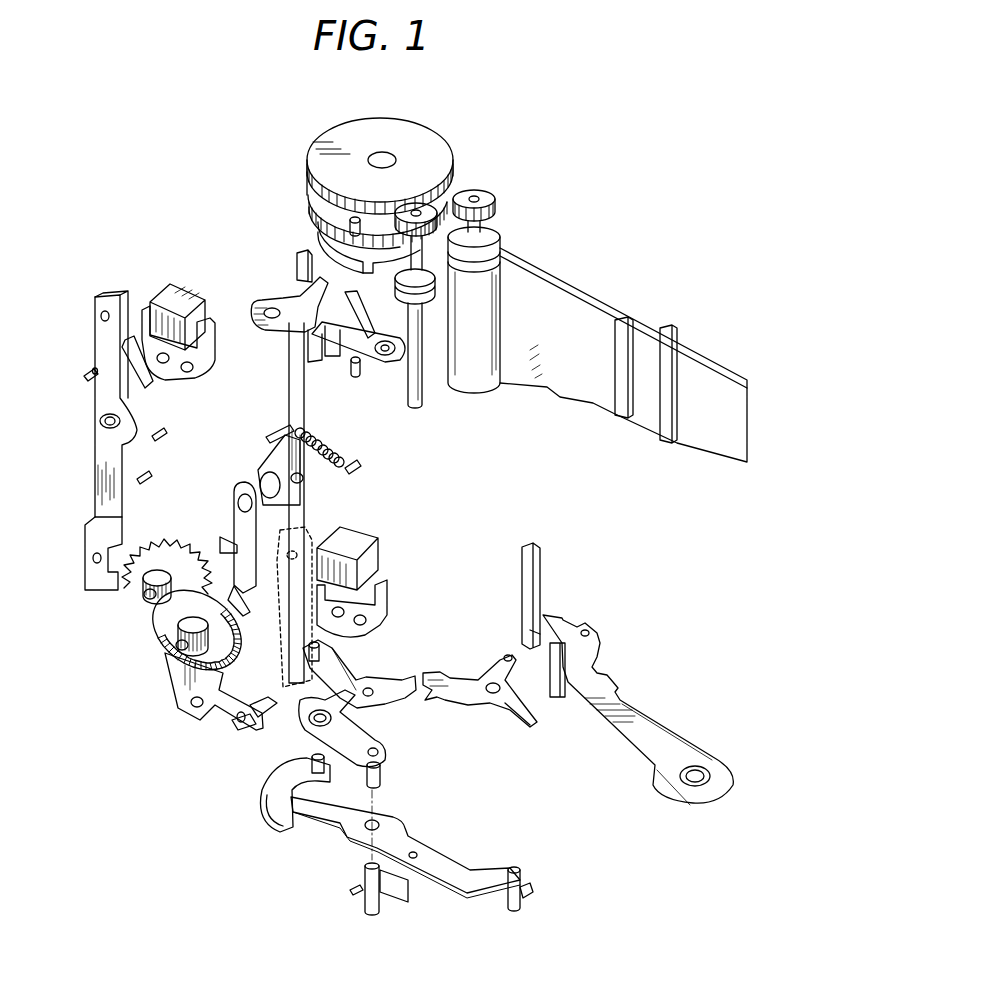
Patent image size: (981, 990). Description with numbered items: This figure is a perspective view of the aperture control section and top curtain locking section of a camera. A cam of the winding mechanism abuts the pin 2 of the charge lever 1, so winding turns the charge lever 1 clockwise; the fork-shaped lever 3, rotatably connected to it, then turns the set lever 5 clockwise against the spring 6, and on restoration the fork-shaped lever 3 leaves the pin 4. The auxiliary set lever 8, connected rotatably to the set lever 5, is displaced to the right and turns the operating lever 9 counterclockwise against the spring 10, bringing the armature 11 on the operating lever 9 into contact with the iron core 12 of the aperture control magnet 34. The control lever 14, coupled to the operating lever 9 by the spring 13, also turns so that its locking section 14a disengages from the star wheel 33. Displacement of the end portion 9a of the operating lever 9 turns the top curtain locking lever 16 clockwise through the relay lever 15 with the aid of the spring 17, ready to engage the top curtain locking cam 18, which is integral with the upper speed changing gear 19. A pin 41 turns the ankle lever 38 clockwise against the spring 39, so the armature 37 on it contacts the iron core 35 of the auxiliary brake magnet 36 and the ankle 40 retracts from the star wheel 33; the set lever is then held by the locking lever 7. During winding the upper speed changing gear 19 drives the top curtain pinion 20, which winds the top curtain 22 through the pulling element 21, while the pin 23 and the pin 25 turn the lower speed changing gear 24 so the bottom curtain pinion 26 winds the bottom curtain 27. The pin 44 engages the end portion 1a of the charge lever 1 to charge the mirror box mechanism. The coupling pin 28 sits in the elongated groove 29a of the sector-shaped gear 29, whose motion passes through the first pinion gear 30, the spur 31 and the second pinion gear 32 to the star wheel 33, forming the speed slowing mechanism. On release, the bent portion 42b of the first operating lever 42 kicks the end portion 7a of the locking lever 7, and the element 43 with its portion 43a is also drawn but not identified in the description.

The charge lever 1 is at (355, 830).
The end portion of charge lever 1a is at (533, 888).
The pin 2 is at (268, 830).
The fork-shaped lever 3 is at (350, 892).
The pin 4 is at (378, 912).
The set lever 5 is at (382, 758).
The spring 6 is at (345, 735).
The locking lever 7 is at (450, 678).
The end portion of locking lever 7a is at (525, 718).
The auxiliary set lever 8 is at (350, 680).
The operating lever 9 is at (289, 392).
The end portion of operating lever 9a is at (296, 262).
The spring 10 is at (340, 460).
The armature 11 is at (306, 537).
The iron core 12 is at (388, 588).
The spring 13 is at (260, 458).
The control lever 14 is at (236, 490).
The locking section 14a is at (238, 600).
The relay lever 15 is at (290, 300).
The top curtain locking lever 16 is at (334, 350).
The spring 17 is at (362, 366).
The top curtain locking cam 18 is at (353, 256).
The upper speed changing gear 19 is at (425, 133).
The top curtain pinion 20 is at (430, 207).
The pulling element 21 is at (540, 272).
The top curtain 22 is at (710, 445).
The pin 23 is at (367, 218).
The lower speed changing gear 24 is at (312, 196).
The pin 25 is at (350, 226).
The bottom curtain pinion 26 is at (490, 196).
The bottom curtain 27 is at (592, 405).
The coupling pin 28 is at (240, 728).
The sector-shaped gear 29 is at (200, 712).
The elongated groove 29a is at (262, 712).
The first pinion gear 30 is at (178, 648).
The spur 31 is at (175, 633).
The second pinion gear 32 is at (144, 592).
The star wheel 33 is at (178, 545).
The aperture control magnet 34 is at (362, 548).
The iron core 35 is at (215, 348).
The auxiliary brake magnet 36 is at (183, 284).
The armature 37 is at (130, 290).
The ankle lever 38 is at (97, 297).
The spring 39 is at (118, 440).
The ankle 40 is at (86, 578).
The pin 41 is at (88, 371).
The first operating lever 42 is at (668, 737).
The bent portion 42b is at (554, 699).
The blade 43 is at (541, 560).
The blade edge 43a is at (529, 632).
The pin 44 is at (522, 905).